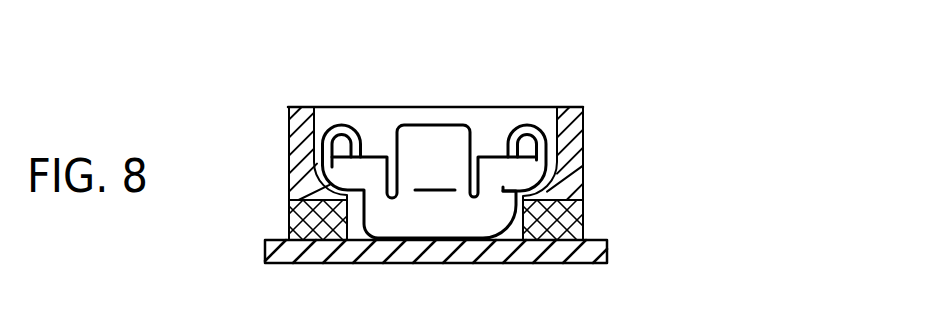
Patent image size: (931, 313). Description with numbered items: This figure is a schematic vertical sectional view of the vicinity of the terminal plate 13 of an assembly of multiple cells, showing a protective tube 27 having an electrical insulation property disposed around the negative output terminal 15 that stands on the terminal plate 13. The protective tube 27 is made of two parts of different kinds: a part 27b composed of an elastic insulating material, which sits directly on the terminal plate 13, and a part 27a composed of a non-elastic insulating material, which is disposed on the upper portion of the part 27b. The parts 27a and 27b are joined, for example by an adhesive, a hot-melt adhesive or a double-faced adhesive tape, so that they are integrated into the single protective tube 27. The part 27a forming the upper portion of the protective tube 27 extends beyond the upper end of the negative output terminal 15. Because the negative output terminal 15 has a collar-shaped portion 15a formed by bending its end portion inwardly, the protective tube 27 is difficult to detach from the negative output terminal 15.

The terminal plate 13 is at (602, 254).
The negative output terminal 15 is at (424, 147).
The collar-shaped portion 15a is at (526, 122).
The protective tube 27 is at (524, 171).
The part composed of a non-elastic insulating material 27a is at (583, 134).
The part composed of an elastic insulating material 27b is at (583, 223).